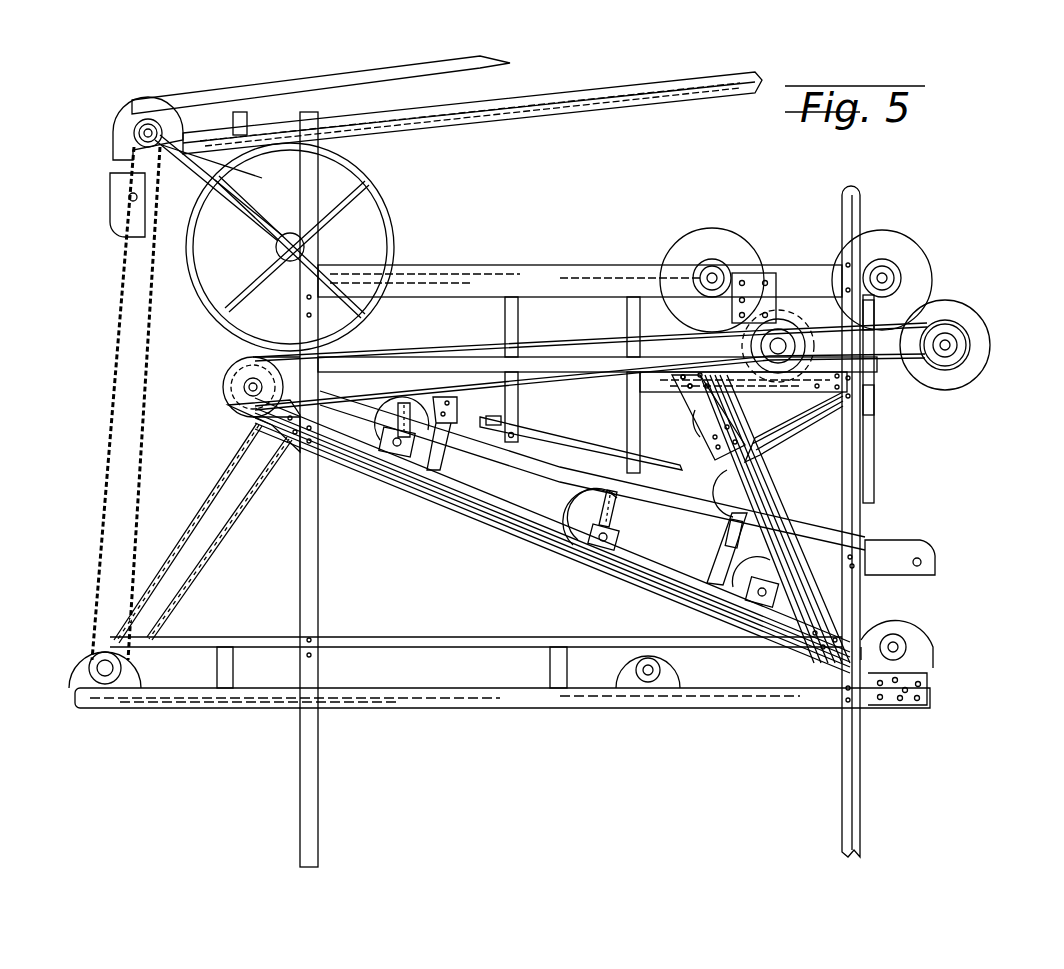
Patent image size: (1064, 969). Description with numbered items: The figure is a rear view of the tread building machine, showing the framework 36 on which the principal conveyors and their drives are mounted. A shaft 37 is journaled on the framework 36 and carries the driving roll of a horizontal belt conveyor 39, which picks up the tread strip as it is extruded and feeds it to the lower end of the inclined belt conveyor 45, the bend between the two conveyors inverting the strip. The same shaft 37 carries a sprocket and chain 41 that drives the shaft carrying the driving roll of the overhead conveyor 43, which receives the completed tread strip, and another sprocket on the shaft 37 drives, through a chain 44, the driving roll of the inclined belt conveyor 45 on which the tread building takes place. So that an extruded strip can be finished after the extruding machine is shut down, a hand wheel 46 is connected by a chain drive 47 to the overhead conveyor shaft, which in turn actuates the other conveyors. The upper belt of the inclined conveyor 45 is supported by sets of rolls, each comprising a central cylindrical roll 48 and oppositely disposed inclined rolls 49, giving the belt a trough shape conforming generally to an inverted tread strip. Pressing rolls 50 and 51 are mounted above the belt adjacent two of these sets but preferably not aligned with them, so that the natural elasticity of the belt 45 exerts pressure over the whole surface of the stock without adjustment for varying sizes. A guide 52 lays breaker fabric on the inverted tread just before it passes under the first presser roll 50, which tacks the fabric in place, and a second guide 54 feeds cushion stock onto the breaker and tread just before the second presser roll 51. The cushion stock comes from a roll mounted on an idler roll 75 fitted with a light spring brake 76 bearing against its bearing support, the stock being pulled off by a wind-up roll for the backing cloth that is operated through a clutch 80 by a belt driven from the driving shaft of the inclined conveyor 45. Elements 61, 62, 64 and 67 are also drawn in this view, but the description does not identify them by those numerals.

The framework 36 is at (318, 565).
The shaft 37 is at (90, 665).
The horizontal belt conveyor 39 is at (409, 642).
The chain 41 is at (140, 463).
The overhead conveyor 43 is at (247, 80).
The chain 44 is at (205, 573).
The inclined belt conveyor 45 is at (553, 463).
The hand wheel 46 is at (388, 245).
The chain drive 47 is at (215, 200).
The central cylindrical roll 48 is at (377, 430).
The inclined rolls 49 is at (652, 497).
The pressing roll 50 is at (712, 530).
The pressing roll 51 is at (504, 412).
The guide 52 is at (897, 545).
The second guide 54 is at (590, 430).
The belt 61 is at (420, 360).
The horizontal beam 62 is at (595, 357).
The drive pulley 64 is at (920, 330).
The idler pulley 67 is at (795, 330).
The idler roll 75 is at (735, 257).
The light spring brake 76 is at (762, 495).
The clutch 80 is at (957, 352).